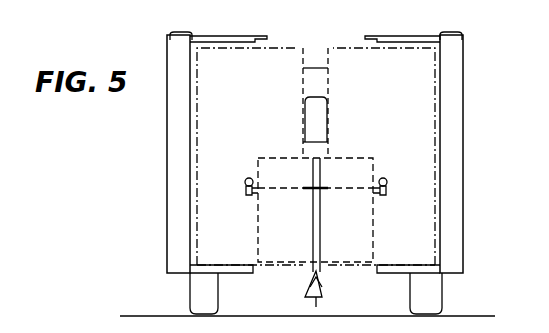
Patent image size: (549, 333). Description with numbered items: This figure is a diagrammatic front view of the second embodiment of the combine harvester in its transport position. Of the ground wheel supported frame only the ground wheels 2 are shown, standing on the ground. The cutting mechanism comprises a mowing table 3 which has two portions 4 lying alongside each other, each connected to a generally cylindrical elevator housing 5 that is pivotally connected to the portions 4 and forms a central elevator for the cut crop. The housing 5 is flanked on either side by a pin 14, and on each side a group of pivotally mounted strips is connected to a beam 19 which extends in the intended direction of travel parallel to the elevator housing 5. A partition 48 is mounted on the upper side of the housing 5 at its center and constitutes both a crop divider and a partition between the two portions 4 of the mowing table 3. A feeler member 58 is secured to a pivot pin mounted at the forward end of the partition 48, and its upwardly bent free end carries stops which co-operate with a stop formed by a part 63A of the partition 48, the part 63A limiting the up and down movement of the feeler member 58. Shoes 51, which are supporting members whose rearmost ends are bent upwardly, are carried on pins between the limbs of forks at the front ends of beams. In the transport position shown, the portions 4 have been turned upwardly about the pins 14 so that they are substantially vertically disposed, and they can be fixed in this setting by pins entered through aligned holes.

The ground wheels 2 is at (190, 305).
The mowing table 3 is at (166, 168).
The portions of the mowing table 4 is at (337, 44).
The elevator housing 5 is at (375, 246).
The pins 14 is at (248, 194).
The beam 19 is at (249, 178).
The partition 48 is at (322, 240).
The shoes 51 is at (185, 32).
The feeler member 58 is at (322, 305).
The part of the partition 63A is at (308, 287).